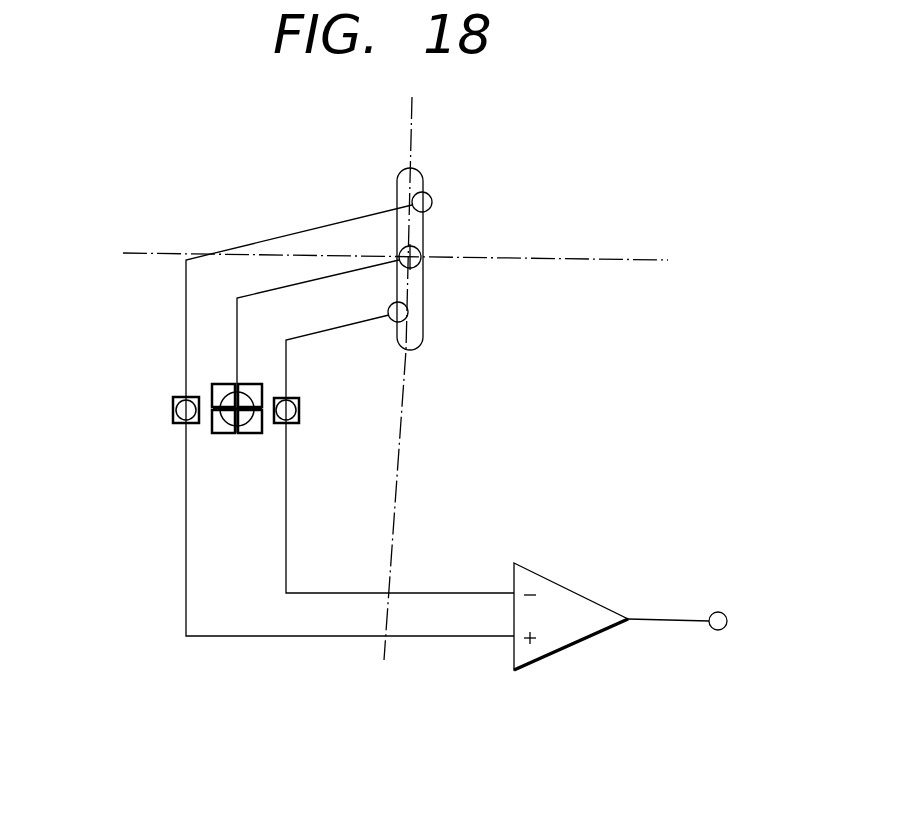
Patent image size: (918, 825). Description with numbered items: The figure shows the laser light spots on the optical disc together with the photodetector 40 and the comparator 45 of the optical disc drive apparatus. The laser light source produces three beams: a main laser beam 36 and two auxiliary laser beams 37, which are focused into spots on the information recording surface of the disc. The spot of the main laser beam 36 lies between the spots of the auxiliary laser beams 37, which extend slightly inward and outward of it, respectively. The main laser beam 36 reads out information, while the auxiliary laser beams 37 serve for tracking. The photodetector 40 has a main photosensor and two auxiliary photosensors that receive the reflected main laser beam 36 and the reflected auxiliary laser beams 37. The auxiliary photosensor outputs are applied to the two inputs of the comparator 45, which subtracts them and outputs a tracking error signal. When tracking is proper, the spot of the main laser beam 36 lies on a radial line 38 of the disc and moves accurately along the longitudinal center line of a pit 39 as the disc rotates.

The main laser beam 36 is at (420, 246).
The auxiliary laser beams 37 is at (431, 199).
The radial line 38 is at (624, 258).
The pit 39 is at (420, 333).
The photodetector 40 is at (170, 430).
The comparator 45 is at (550, 579).